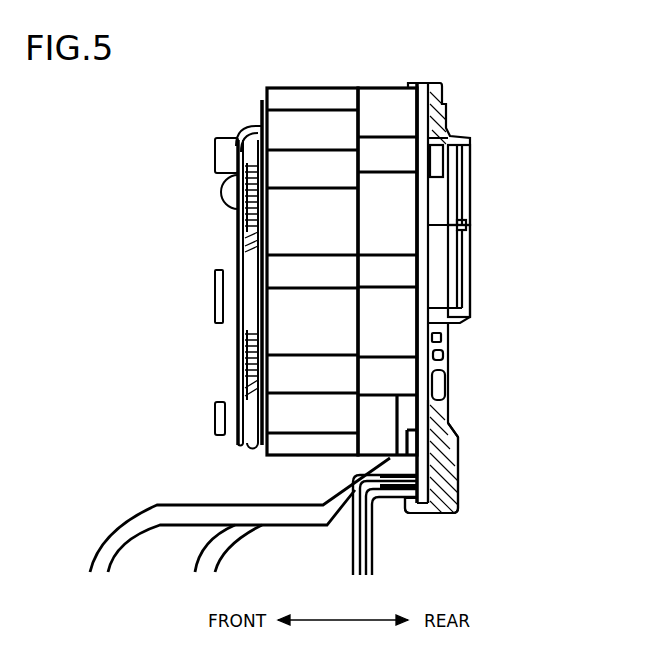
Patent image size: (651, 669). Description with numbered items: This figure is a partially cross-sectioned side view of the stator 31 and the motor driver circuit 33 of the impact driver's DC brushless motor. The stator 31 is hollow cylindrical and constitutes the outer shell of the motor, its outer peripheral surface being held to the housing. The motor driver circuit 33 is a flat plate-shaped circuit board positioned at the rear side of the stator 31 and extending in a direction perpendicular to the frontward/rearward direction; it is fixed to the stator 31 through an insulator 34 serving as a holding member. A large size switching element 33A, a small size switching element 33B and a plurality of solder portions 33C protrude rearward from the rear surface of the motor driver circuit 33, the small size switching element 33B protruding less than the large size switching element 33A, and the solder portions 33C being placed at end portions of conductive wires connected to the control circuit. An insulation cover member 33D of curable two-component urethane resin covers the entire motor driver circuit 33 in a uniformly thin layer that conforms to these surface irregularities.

The stator 31 is at (278, 372).
The insulator 34 is at (378, 222).
The motor driver circuit 33 is at (447, 342).
The large size switching element 33A is at (443, 190).
The small size switching element 33B is at (445, 368).
The solder portion 33C is at (438, 475).
The insulation cover member 33D is at (465, 233).